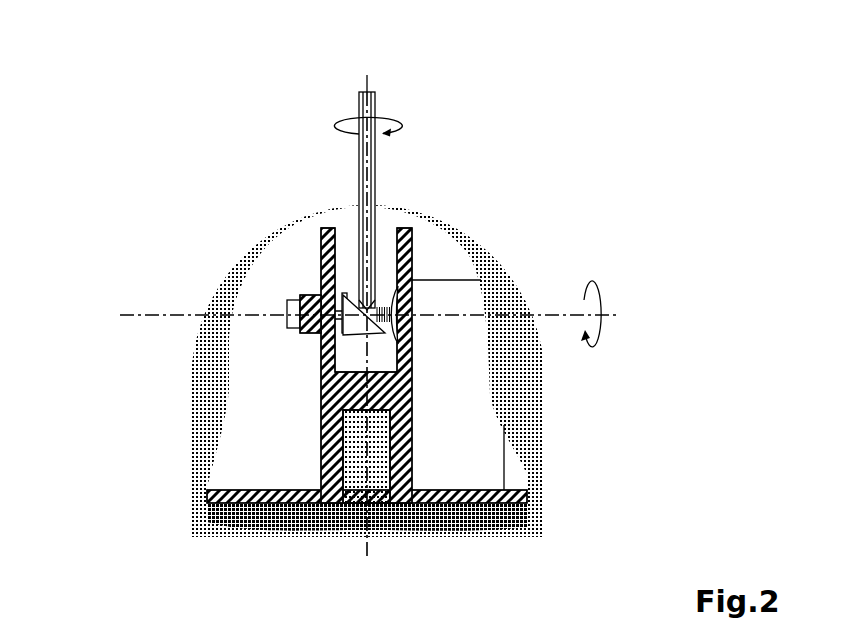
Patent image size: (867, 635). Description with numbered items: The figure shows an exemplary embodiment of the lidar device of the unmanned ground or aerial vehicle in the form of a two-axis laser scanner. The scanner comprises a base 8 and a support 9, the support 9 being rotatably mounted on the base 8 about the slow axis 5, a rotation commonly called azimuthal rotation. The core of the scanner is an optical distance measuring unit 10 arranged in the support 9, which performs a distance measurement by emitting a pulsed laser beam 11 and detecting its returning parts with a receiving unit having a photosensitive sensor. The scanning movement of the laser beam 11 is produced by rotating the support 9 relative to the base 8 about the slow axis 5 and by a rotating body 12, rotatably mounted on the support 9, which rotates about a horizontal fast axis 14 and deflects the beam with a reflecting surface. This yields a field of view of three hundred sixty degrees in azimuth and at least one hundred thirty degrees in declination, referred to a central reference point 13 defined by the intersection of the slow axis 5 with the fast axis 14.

The slow axis 5 is at (342, 87).
The base 8 is at (296, 479).
The support 9 is at (484, 202).
The optical distance measuring unit 10 is at (438, 371).
The pulsed laser beam 11 is at (430, 172).
The rotating body 12 is at (221, 250).
The central reference point 13 is at (505, 248).
The fast axis 14 is at (641, 290).